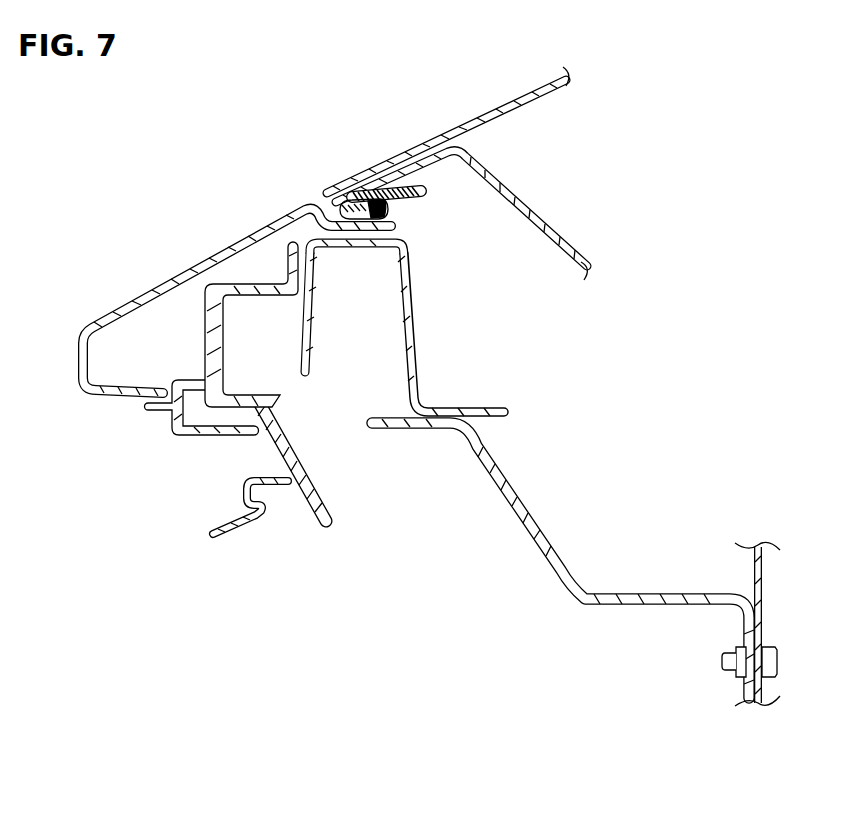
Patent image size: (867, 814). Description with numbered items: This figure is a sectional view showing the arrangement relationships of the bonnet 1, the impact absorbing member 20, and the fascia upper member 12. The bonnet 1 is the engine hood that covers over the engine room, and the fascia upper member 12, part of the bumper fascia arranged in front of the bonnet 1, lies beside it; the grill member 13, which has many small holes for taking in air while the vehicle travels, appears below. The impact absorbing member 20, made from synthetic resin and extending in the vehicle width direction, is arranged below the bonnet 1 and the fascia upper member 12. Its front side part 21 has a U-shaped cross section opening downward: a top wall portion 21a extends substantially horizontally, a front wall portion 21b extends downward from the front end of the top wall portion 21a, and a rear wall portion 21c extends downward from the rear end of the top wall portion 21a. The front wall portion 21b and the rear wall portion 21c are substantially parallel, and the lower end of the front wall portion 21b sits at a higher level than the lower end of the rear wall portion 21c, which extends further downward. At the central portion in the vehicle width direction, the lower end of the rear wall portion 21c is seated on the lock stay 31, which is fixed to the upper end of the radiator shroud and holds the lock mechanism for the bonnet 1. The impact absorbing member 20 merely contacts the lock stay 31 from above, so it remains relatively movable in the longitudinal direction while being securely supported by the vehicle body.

The bonnet 1 is at (470, 120).
The fascia upper member 12 is at (152, 290).
The grill member 13 is at (178, 436).
The impact absorbing member 20 is at (442, 350).
The front side part 21 is at (422, 328).
The top wall portion 21a is at (345, 248).
The front wall portion 21b is at (316, 346).
The rear wall portion 21c is at (412, 275).
The lock stay 31 is at (508, 506).